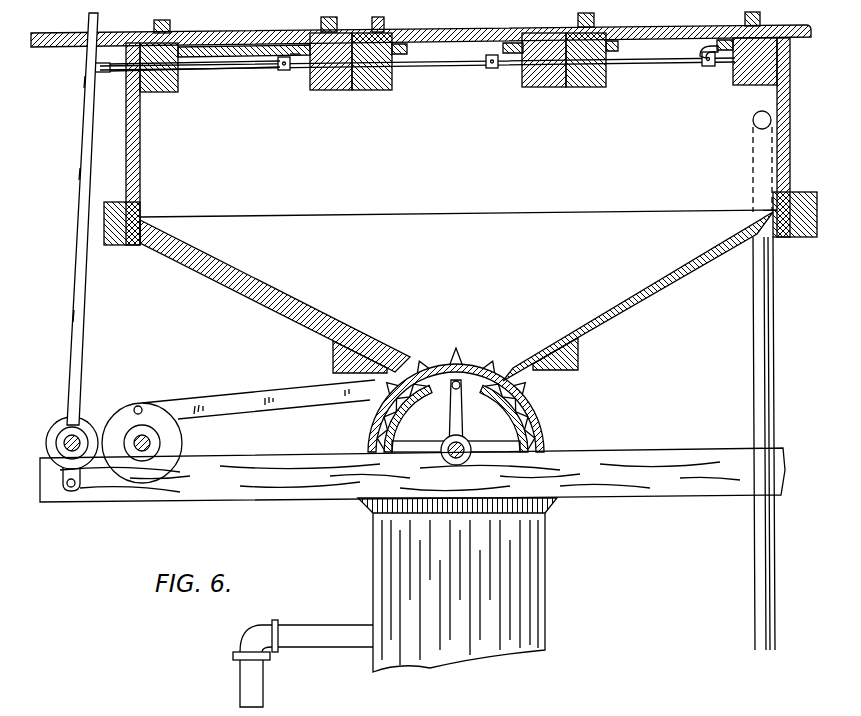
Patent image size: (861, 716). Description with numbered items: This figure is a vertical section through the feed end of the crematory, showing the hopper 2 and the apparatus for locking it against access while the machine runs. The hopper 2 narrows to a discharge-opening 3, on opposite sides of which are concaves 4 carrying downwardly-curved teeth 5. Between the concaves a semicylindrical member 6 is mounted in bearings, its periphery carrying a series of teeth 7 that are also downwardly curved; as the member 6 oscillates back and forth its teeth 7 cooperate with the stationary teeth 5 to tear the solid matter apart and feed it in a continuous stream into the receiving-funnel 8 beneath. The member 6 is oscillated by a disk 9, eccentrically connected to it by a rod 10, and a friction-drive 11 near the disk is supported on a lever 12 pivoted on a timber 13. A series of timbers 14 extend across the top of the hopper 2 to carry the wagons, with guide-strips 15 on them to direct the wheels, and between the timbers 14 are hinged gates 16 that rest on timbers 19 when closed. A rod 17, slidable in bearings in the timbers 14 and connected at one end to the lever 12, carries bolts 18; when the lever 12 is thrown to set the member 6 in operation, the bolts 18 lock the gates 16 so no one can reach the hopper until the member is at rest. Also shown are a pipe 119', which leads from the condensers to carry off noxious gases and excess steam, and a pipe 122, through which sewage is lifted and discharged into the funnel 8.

The hopper 2 is at (293, 306).
The discharge-opening 3 is at (481, 359).
The concaves 4 is at (548, 413).
The teeth 5 is at (545, 397).
The semicylindrical member 6 is at (465, 386).
The teeth 7 is at (419, 372).
The receiving-funnel 8 is at (547, 536).
The disk 9 is at (181, 440).
The rod 10 is at (252, 398).
The friction-drive 11 is at (88, 424).
The lever 12 is at (88, 345).
The timber 13 is at (144, 494).
The timbers 14 is at (173, 91).
The guide-strips 15 is at (170, 25).
The gates 16 is at (257, 34).
The rod 17 is at (256, 66).
The bolts 18 is at (284, 72).
The timbers 19 is at (290, 54).
The pipes 119' is at (726, 443).
The pipe 122 is at (265, 684).